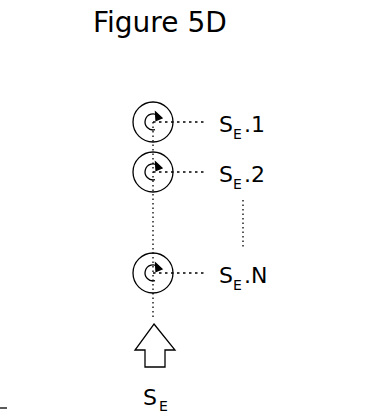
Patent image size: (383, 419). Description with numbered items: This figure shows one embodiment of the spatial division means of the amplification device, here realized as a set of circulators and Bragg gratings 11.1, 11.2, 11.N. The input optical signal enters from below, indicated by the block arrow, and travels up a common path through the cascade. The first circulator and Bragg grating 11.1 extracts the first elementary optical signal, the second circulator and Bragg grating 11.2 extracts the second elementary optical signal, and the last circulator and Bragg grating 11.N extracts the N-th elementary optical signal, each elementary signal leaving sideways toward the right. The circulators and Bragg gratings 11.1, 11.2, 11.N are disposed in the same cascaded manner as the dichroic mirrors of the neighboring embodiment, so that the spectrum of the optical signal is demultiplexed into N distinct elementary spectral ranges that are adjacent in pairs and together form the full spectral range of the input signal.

The circulator and Bragg grating 11.1 is at (138, 111).
The circulator and Bragg grating 11.2 is at (138, 162).
The circulator and Bragg grating 11.N is at (138, 261).